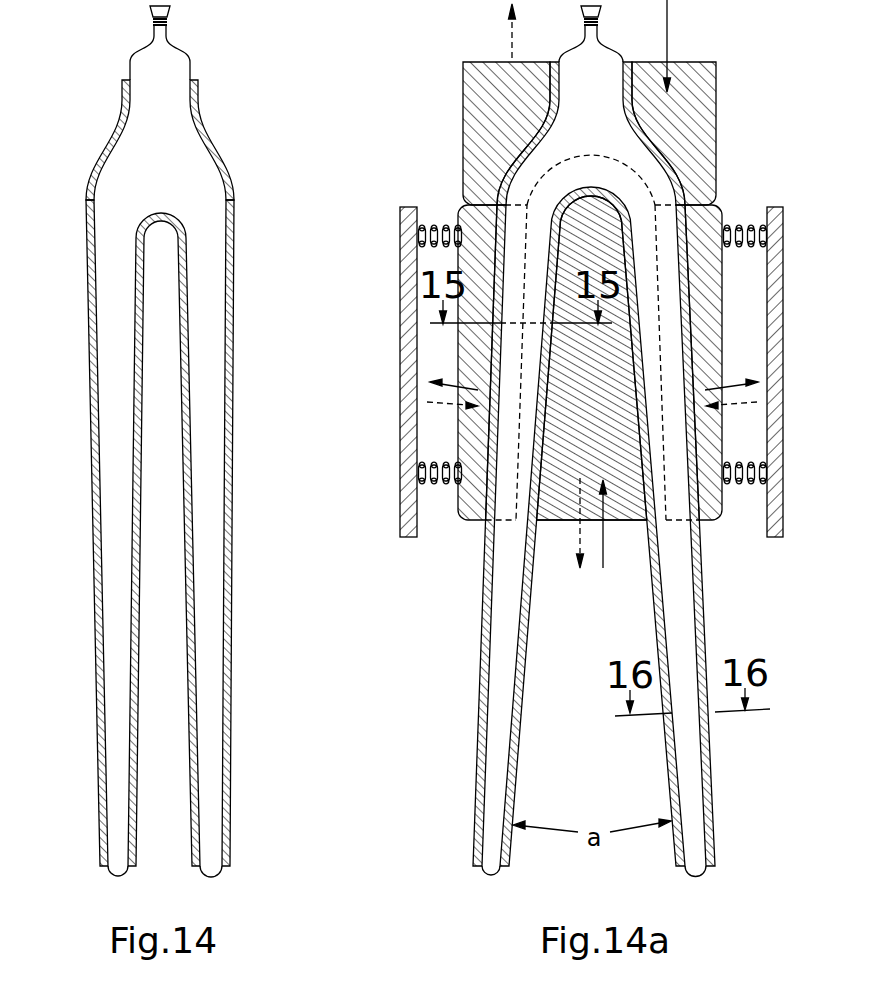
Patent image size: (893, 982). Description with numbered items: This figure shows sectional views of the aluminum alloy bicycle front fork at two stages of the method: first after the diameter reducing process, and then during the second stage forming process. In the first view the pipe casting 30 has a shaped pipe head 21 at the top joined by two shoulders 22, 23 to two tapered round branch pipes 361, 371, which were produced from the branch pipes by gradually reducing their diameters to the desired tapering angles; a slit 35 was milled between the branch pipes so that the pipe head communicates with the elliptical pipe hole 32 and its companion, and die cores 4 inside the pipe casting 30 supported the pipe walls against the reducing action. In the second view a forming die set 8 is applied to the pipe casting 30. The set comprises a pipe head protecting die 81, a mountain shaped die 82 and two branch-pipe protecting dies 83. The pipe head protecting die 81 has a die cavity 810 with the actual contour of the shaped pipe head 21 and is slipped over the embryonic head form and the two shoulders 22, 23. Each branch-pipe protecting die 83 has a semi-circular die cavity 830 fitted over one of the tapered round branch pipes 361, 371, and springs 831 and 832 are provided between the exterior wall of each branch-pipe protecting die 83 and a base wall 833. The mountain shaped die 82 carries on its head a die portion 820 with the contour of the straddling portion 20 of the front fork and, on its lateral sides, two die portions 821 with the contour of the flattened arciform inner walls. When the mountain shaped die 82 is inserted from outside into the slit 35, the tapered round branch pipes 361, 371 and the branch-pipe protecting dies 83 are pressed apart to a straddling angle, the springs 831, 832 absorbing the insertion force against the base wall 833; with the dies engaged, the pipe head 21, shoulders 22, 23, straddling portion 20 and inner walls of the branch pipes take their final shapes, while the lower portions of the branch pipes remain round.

In FIG. 14, the die cores 4 is at (152, 171).
In FIG. 14A, the die cores 4 is at (591, 312).
In FIG. 14A, the forming die set 8 is at (584, 282).
In FIG. 14A, the straddling portion 20 is at (600, 255).
In FIG. 14A, the shaped pipe head 21 is at (552, 66).
In FIG. 14, the shoulder 22 is at (107, 148).
In FIG. 14A, the shoulder 22 is at (532, 142).
In FIG. 14, the shoulder 23 is at (213, 143).
In FIG. 14A, the shoulder 23 is at (652, 147).
In FIG. 14, the pipe casting 30 is at (167, 441).
In FIG. 14, the elliptical pipe hole 32 is at (197, 82).
In FIG. 14, the slit 35 is at (163, 685).
In FIG. 14, the tapered round branch pipe 361 is at (92, 456).
In FIG. 14A, the tapered round branch pipe 361 is at (484, 632).
In FIG. 14, the tapered round branch pipe 371 is at (231, 439).
In FIG. 14A, the tapered round branch pipe 371 is at (703, 630).
In FIG. 14A, the pipe head protecting die 81 is at (692, 64).
In FIG. 14A, the mountain shaped die 82 is at (624, 497).
In FIG. 14A, the branch-pipe protecting die 83 is at (472, 215).
In FIG. 14A, the die cavity 810 is at (628, 66).
In FIG. 14A, the die portion 820 is at (615, 287).
In FIG. 14A, the die portion 821 is at (549, 490).
In FIG. 14A, the semi-circular die cavity 830 is at (500, 353).
In FIG. 14A, the spring 831 is at (432, 250).
In FIG. 14A, the spring 832 is at (430, 488).
In FIG. 14A, the base wall 833 is at (421, 410).